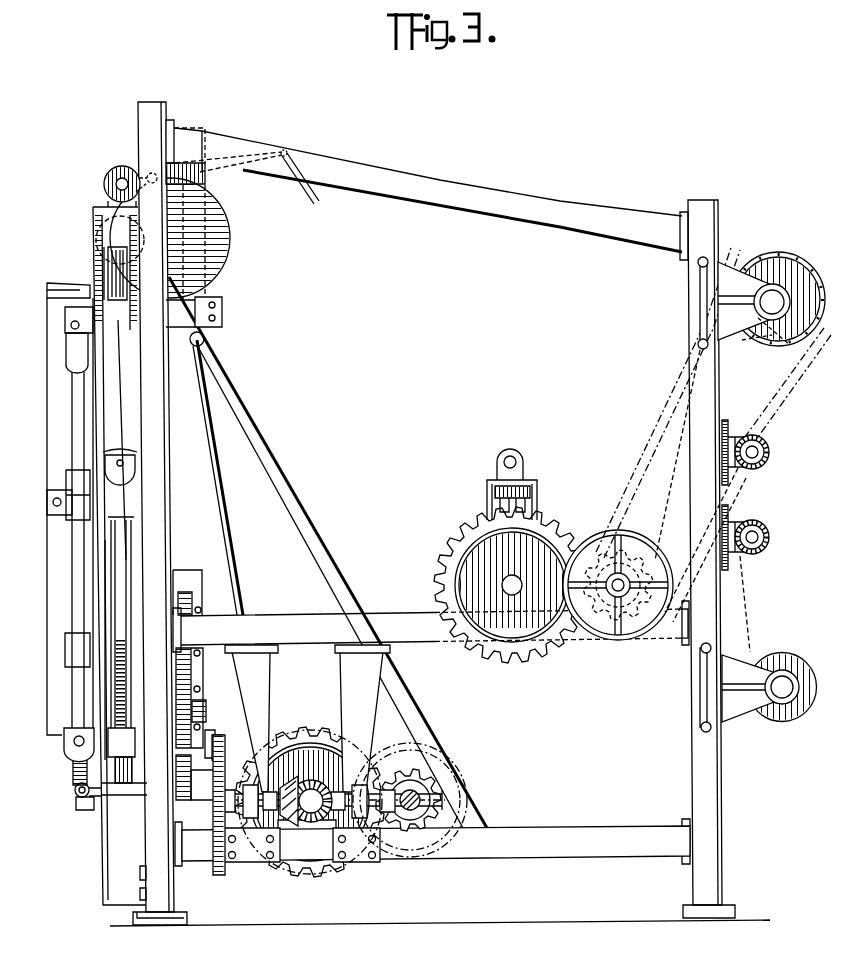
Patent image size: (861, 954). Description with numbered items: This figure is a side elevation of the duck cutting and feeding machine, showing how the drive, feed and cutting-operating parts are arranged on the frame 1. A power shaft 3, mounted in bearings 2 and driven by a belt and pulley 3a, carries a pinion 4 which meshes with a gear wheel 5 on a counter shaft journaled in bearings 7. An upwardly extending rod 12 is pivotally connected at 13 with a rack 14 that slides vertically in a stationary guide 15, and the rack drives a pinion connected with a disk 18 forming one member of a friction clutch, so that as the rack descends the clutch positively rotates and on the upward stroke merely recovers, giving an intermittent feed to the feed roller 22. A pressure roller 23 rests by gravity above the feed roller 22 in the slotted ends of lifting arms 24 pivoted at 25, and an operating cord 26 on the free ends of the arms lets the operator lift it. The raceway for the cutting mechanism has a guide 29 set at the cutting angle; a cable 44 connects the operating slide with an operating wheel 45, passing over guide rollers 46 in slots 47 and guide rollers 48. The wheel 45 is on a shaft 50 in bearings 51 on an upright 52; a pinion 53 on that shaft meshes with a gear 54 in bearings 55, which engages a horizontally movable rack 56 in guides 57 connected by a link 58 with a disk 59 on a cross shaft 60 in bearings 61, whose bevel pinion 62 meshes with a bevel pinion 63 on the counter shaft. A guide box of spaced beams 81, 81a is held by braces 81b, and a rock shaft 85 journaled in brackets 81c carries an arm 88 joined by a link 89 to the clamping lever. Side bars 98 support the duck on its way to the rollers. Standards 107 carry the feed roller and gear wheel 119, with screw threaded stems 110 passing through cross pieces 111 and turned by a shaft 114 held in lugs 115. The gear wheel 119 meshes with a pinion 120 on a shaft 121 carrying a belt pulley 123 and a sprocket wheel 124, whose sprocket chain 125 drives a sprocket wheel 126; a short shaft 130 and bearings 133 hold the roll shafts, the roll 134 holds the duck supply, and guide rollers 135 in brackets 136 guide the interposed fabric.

The frame 1 is at (431, 166).
The bearings 2 is at (460, 812).
The power shaft 3 is at (453, 771).
The belt and pulley 3a is at (470, 777).
The pinion 4 is at (426, 762).
The gear wheel 5 is at (298, 733).
The bearings 7 is at (290, 871).
The rod 12 is at (222, 491).
The pivotal connection 13 is at (222, 336).
The rack 14 is at (194, 346).
The stationary guide 15 is at (206, 184).
The disk 18 is at (229, 238).
The feed roller 22 is at (108, 210).
The pressure roller 23 is at (120, 172).
The lifting arms 24 is at (206, 168).
The pivot 25 is at (152, 172).
The operating cord 26 is at (313, 200).
The guide 29 is at (104, 256).
The cable 44 is at (115, 386).
The operating wheel 45 is at (127, 557).
The guide rollers 46 is at (128, 266).
The slots 47 is at (95, 240).
The guide rollers 48 is at (132, 450).
The shaft 50 is at (130, 622).
The bearings 51 is at (110, 600).
The upright 52 is at (187, 568).
The pinion 53 is at (193, 590).
The gear 54 is at (190, 673).
The bearings 55 is at (201, 710).
The rack 56 is at (176, 786).
The guides 57 is at (190, 802).
The link 58 is at (216, 736).
The disk 59 is at (215, 876).
The cross shaft 60 is at (312, 836).
The bearings 61 is at (246, 862).
The bevel pinion 62 is at (300, 832).
The bevel pinion 63 is at (340, 760).
The beam 81 is at (72, 386).
The beam 81a is at (63, 283).
The braces 81b is at (66, 318).
The brackets 81c is at (62, 488).
The rock shaft 85 is at (72, 556).
The arm 88 is at (74, 790).
The link 89 is at (95, 808).
The side bars 98 is at (289, 471).
The standards 107 is at (487, 497).
The screw threaded stems 110 is at (531, 494).
The cross pieces 111 is at (488, 483).
The shaft 114 is at (512, 456).
The lugs 115 is at (517, 462).
The gear wheel 119 is at (569, 531).
The pinion 120 is at (632, 626).
The shaft 121 is at (598, 626).
The belt pulley 123 is at (636, 546).
The sprocket wheel 124 is at (632, 581).
The sprocket chain 125 is at (652, 418).
The sprocket wheel 126 is at (785, 366).
The short shaft 130 is at (758, 348).
The bearings 133 is at (748, 278).
The roll 134 is at (790, 660).
The guide rollers 135 is at (766, 528).
The brackets 136 is at (742, 476).